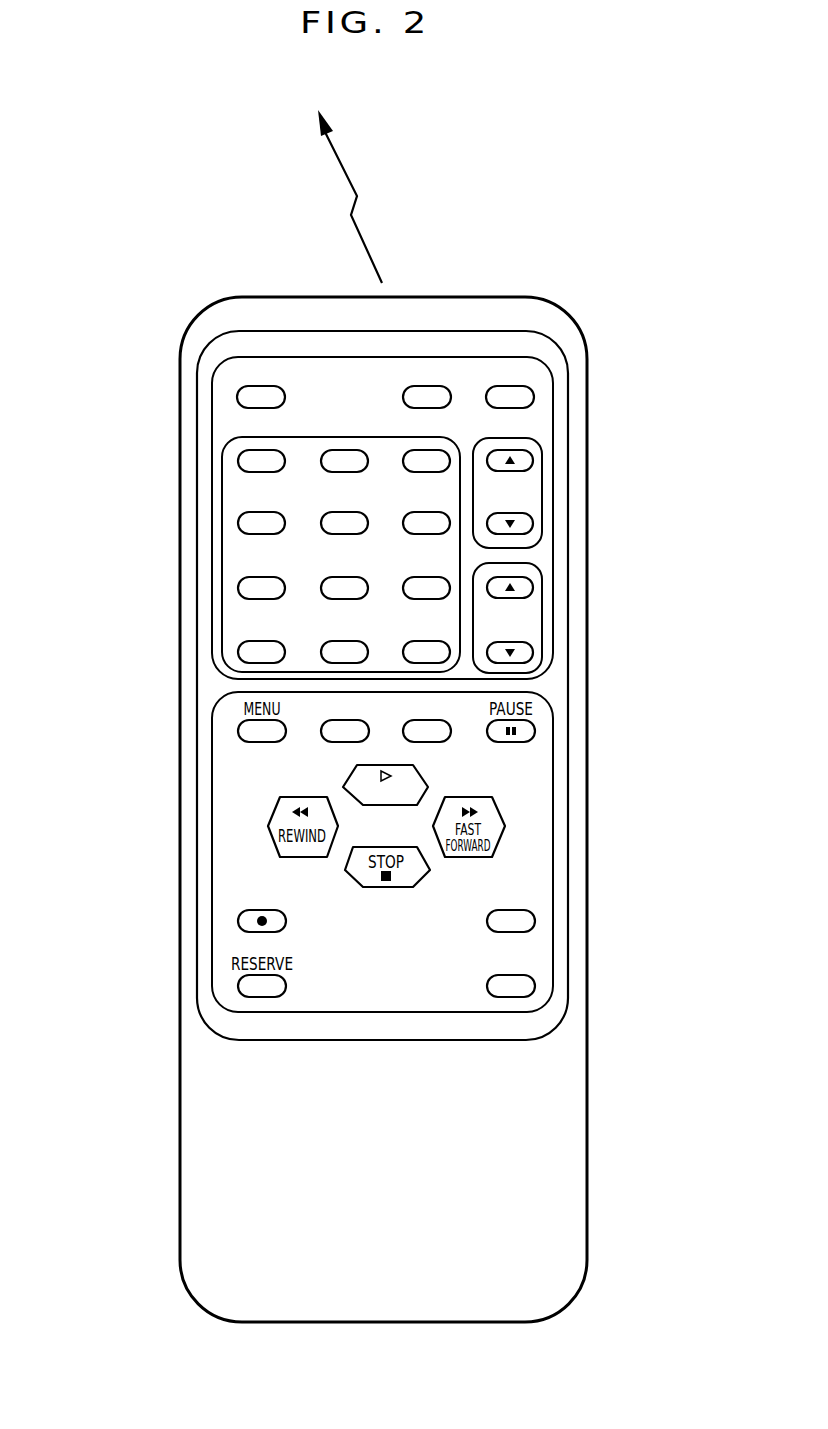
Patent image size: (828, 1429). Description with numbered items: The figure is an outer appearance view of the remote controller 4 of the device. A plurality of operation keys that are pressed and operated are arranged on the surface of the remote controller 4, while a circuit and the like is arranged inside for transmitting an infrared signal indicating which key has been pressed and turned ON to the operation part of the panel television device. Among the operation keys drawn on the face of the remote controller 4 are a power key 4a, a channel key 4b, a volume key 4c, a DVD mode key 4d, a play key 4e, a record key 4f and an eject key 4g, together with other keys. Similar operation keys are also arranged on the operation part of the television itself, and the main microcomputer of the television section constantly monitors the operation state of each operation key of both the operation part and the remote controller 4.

The remote controller 4 is at (163, 276).
The power key 4a is at (237, 397).
The channel key 4b is at (222, 560).
The volume key 4c is at (542, 617).
The DVD mode key 4d is at (333, 742).
The play key 4e is at (353, 767).
The record key 4f is at (238, 921).
The eject key 4g is at (535, 921).